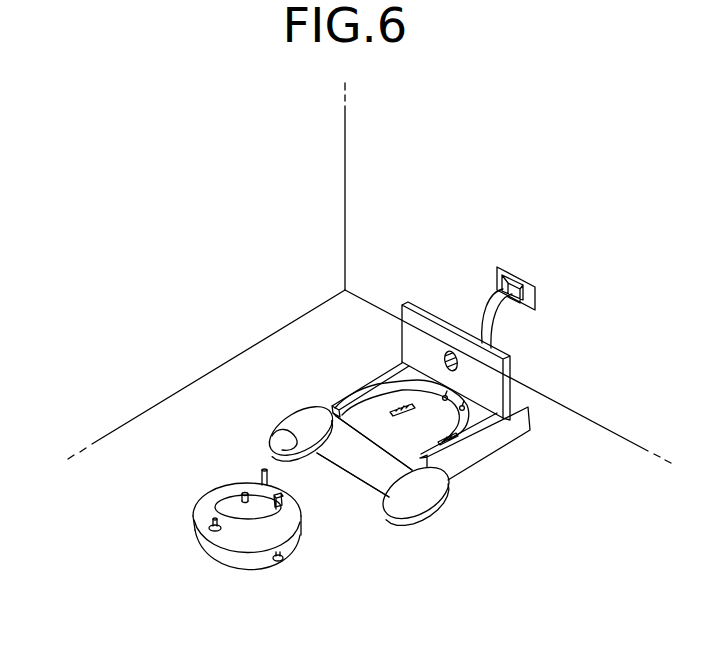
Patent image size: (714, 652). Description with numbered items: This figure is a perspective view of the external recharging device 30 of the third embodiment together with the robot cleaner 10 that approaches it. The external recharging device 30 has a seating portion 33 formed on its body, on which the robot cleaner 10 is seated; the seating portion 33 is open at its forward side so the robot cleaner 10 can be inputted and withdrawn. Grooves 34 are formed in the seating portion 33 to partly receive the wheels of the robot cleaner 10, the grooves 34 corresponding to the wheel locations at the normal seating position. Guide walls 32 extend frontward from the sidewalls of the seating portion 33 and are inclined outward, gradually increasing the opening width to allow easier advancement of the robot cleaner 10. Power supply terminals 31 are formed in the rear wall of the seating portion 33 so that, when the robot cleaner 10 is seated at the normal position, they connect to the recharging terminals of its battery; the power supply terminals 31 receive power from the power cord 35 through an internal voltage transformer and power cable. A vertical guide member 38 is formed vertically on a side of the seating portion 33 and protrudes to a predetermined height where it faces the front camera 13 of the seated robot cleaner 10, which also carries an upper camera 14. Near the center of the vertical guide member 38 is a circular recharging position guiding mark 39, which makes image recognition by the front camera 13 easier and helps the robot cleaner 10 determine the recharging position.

The robot cleaner 10 is at (195, 518).
The front camera 13 is at (280, 510).
The upper camera 14 is at (244, 494).
The external recharging device 30 is at (306, 333).
The power supply terminals 31 is at (447, 396).
The guide walls 32 is at (282, 430).
The seating portion 33 is at (397, 445).
The grooves 34 is at (398, 408).
The power cord 35 is at (509, 273).
The vertical guide member 38 is at (430, 332).
The recharging position guiding mark 39 is at (448, 352).